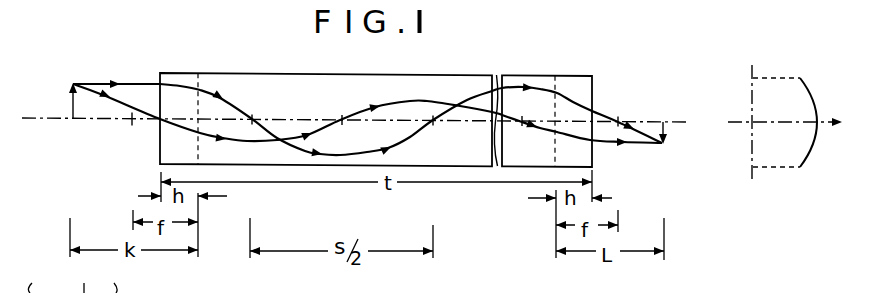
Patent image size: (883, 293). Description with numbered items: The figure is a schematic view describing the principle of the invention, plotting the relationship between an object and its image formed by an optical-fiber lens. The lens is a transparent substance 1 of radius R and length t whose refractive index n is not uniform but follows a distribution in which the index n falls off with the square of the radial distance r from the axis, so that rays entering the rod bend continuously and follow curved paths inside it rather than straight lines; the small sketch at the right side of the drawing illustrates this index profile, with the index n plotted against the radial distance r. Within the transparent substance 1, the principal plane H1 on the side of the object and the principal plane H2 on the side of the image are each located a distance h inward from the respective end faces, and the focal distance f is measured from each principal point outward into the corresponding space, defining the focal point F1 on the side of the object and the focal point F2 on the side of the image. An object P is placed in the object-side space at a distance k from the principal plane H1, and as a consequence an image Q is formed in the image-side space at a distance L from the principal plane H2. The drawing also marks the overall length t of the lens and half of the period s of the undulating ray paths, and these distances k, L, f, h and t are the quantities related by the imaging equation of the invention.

The transparent substance 1 is at (262, 84).
The object P is at (63, 101).
The image Q is at (673, 137).
The focal point on the side of the object F1 is at (144, 136).
The focal point on the side of the image F2 is at (620, 108).
The principal plane on the side of the object H1 is at (205, 50).
The principal plane on the side of the image H2 is at (555, 104).
The radial distance r is at (782, 136).
The refractive index n is at (795, 122).